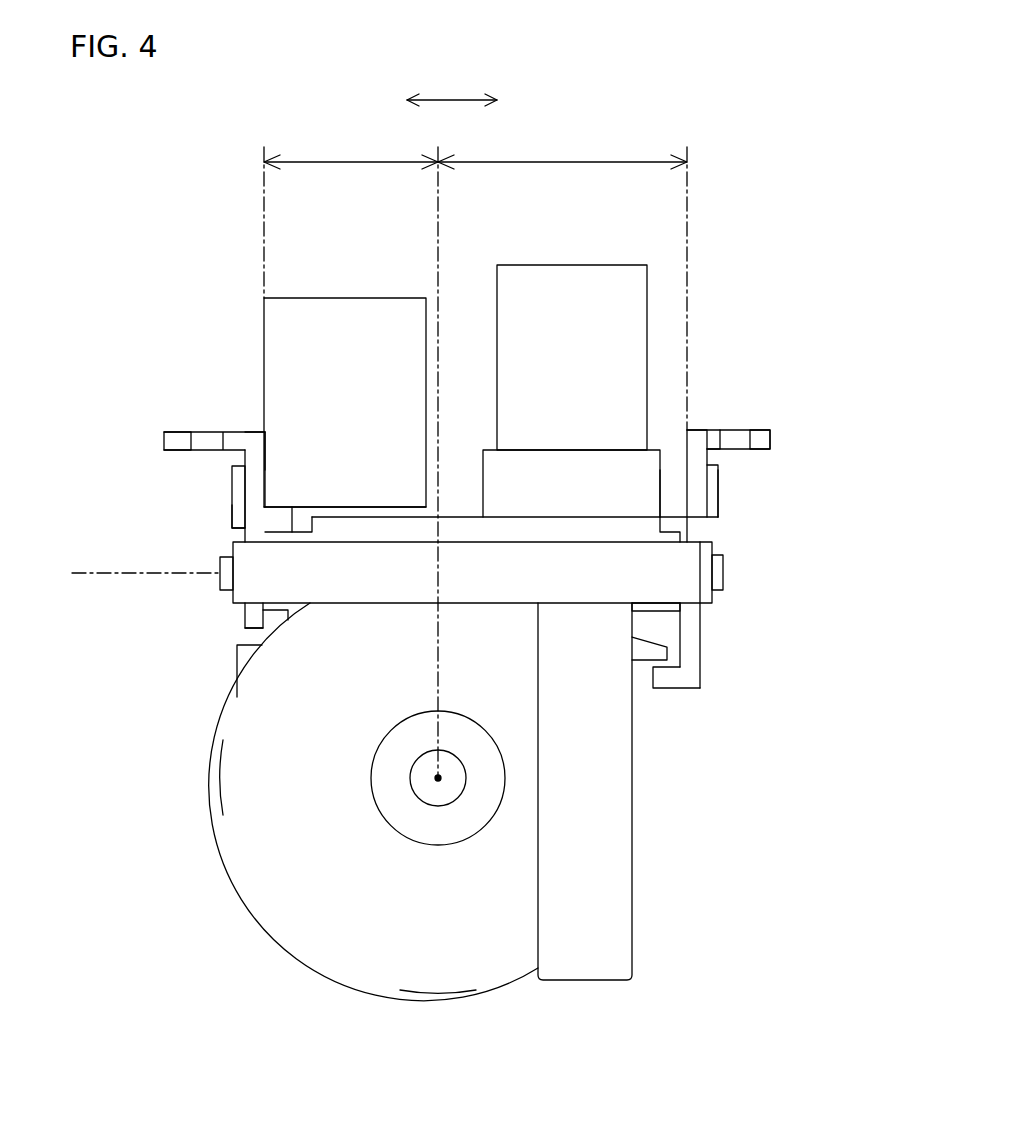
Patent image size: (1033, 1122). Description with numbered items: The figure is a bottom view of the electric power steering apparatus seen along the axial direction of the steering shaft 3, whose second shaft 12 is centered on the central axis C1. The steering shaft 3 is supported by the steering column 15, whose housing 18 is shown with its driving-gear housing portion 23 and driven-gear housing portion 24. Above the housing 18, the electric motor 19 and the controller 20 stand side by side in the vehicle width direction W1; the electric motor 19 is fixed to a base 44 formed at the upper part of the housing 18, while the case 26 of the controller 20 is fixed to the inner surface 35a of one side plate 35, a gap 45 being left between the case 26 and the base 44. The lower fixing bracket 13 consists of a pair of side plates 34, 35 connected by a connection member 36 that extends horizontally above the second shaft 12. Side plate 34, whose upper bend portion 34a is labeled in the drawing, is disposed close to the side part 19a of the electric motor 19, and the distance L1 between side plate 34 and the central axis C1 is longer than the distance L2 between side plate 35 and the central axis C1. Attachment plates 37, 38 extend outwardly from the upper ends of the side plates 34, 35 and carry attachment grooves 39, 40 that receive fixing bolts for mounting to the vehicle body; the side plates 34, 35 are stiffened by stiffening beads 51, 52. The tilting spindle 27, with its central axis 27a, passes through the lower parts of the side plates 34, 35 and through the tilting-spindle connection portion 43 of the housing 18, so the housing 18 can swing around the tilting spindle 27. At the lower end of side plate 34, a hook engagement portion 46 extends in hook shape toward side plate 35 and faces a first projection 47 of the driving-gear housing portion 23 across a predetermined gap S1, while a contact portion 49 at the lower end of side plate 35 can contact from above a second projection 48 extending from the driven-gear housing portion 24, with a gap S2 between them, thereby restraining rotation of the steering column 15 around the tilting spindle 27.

The steering shaft 3 is at (410, 785).
The second shaft 12 is at (418, 803).
The lower fixing bracket 13 is at (707, 430).
The steering column 15 is at (213, 777).
The housing 18 is at (225, 815).
The electric motor 19 is at (572, 265).
The side part of the electric motor 19a is at (663, 502).
The controller 20 is at (320, 298).
The driving-gear housing portion 23 is at (633, 897).
The driven-gear housing portion 24 is at (438, 993).
The case 26 is at (378, 312).
The tilting spindle 27 is at (723, 573).
The central axis of the tilting spindle 27a is at (95, 573).
The side plate 34 is at (710, 480).
The right support bend portion 34a is at (687, 433).
The side plate 35 is at (245, 490).
The inner surface 35a is at (265, 458).
The connection member 36 is at (483, 583).
The attachment plate 37 is at (770, 440).
The attachment plate 38 is at (164, 440).
The attachment groove 39 is at (740, 440).
The attachment groove 40 is at (205, 437).
The tilting-spindle connection portion 43 is at (243, 478).
The base 44 is at (452, 517).
The gap 45 is at (293, 517).
The hook engagement portion 46 is at (665, 683).
The first projection 47 is at (650, 648).
The second projection 48 is at (245, 665).
The contact portion 49 is at (245, 615).
The stiffening bead 51 is at (722, 492).
The stiffening bead 52 is at (238, 522).
The predetermined gap S1 is at (673, 665).
The left gap S2 is at (250, 637).
The central axis of the steering shaft C1 is at (438, 778).
The vehicle width direction W1 is at (452, 100).
The distance L1 is at (565, 160).
The distance L2 is at (350, 160).